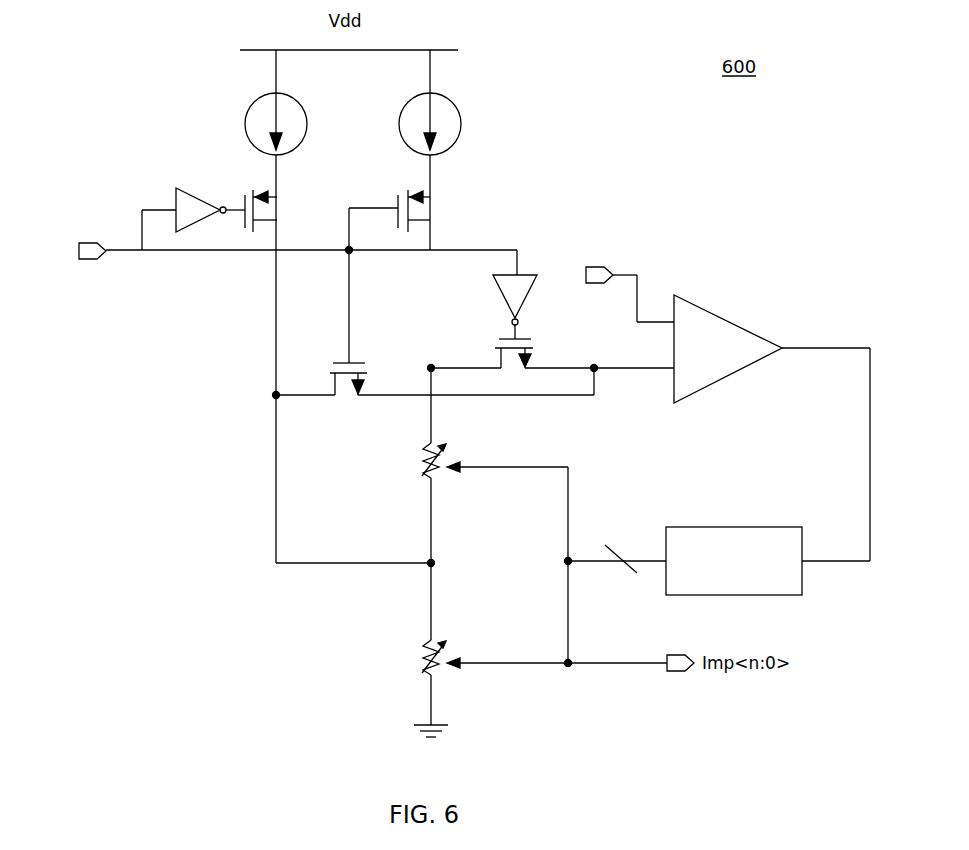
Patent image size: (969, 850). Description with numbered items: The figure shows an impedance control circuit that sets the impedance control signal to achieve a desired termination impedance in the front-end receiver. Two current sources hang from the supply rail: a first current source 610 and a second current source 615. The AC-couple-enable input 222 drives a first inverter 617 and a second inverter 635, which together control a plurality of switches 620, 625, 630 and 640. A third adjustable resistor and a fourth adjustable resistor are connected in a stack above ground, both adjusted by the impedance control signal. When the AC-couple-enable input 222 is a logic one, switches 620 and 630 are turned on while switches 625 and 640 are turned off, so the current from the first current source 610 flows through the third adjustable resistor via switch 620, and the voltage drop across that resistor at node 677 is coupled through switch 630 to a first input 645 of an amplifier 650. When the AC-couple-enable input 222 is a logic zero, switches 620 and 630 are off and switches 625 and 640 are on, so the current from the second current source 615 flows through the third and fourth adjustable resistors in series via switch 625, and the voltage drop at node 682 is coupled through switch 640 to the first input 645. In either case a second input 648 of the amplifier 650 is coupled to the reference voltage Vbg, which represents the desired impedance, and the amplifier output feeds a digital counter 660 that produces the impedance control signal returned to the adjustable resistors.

The AC-couple-enable input 222 is at (88, 244).
The first current source 610 is at (248, 110).
The second current source 615 is at (411, 101).
The first inverter 617 is at (178, 188).
The switch 620 is at (272, 190).
The switch 625 is at (415, 191).
The switch 630 is at (345, 357).
The second inverter 635 is at (500, 276).
The switch 640 is at (505, 336).
The first input of the amplifier 645 is at (592, 366).
The second input of the amplifier 648 is at (627, 275).
The amplifier 650 is at (704, 309).
The digital counter 660 is at (731, 527).
The node 677 is at (429, 562).
The node 682 is at (429, 367).